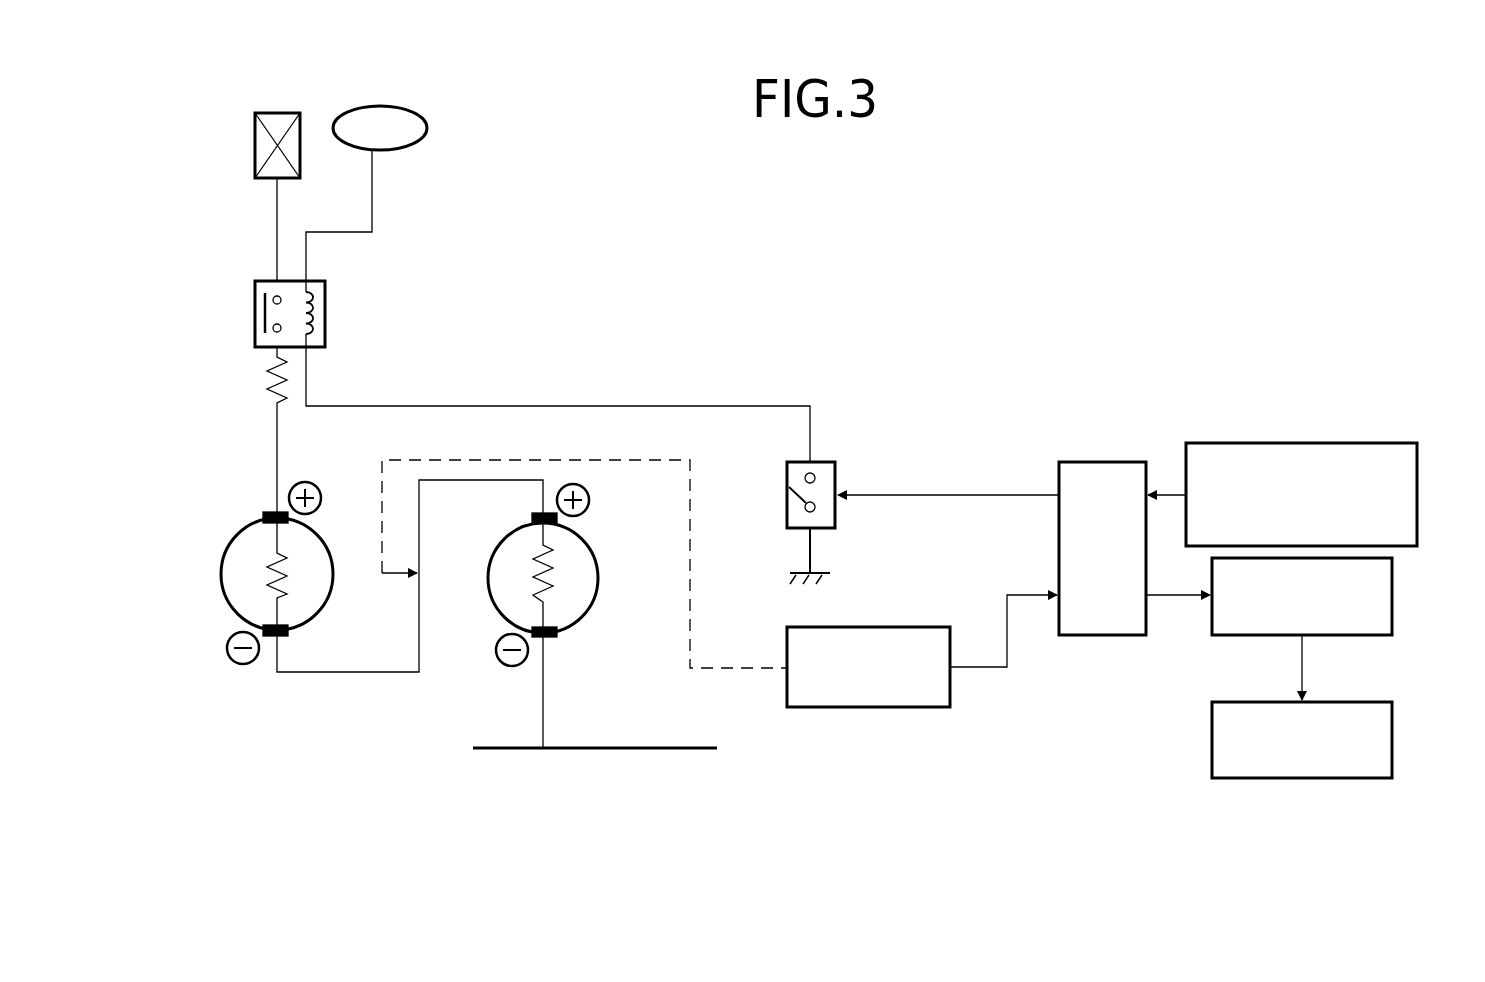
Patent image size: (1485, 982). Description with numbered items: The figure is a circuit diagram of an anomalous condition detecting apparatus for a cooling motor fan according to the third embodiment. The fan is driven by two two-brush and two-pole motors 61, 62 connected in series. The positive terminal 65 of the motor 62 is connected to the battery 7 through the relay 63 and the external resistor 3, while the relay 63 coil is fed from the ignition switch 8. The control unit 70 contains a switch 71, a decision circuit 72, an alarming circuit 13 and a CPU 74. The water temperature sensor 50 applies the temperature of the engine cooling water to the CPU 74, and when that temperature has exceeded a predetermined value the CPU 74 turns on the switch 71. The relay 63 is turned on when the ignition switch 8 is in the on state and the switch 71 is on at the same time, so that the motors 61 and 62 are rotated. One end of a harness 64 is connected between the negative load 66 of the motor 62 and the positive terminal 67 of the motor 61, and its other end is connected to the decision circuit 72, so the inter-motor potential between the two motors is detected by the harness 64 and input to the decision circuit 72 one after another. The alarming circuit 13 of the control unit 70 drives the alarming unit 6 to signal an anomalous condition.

The battery 7 is at (255, 120).
The ignition switch 8 is at (362, 107).
The relay 63 is at (327, 312).
The external resistor 3 is at (267, 385).
The two-brush and two-pole motor 62 is at (259, 564).
The positive terminal 65 is at (268, 512).
The negative load 66 is at (290, 630).
The two-brush and two-pole motor 61 is at (533, 575).
The positive terminal 67 is at (558, 520).
The harness 64 is at (692, 538).
The control unit 70 is at (1134, 533).
The switch 71 is at (826, 460).
The CPU 74 is at (1094, 462).
The water temperature sensor 50 is at (1420, 492).
The alarming circuit 13 is at (1395, 598).
The alarming unit 6 is at (1395, 742).
The decision circuit 72 is at (870, 710).